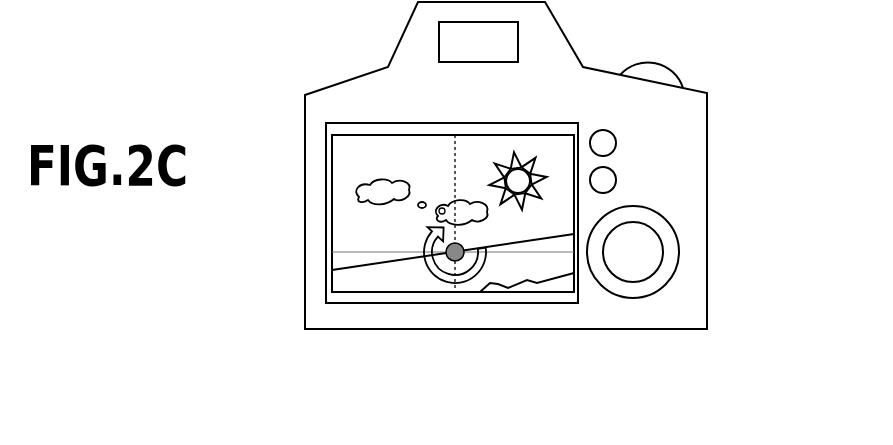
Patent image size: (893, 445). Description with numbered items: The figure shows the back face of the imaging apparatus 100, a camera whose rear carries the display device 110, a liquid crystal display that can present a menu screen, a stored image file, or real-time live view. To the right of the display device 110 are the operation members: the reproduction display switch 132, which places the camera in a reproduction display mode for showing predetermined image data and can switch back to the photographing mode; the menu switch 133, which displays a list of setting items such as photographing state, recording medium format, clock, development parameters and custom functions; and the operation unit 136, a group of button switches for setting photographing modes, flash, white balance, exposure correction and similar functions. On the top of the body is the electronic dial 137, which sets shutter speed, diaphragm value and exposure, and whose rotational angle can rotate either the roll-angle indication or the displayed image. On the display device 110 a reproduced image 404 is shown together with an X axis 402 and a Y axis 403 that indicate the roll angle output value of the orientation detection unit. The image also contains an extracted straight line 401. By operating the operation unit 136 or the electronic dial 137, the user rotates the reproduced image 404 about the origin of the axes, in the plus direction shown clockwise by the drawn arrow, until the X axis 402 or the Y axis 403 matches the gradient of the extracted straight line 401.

The imaging apparatus 100 is at (707, 280).
The display device 110 is at (383, 303).
The reproduction display switch 132 is at (616, 143).
The menu switch 133 is at (616, 180).
The operation unit 136 is at (633, 298).
The electronic dial 137 is at (652, 63).
The extracted straight line 401 is at (326, 270).
The X axis 402 is at (326, 252).
The Y axis 403 is at (455, 292).
The reproduced image 404 is at (348, 157).